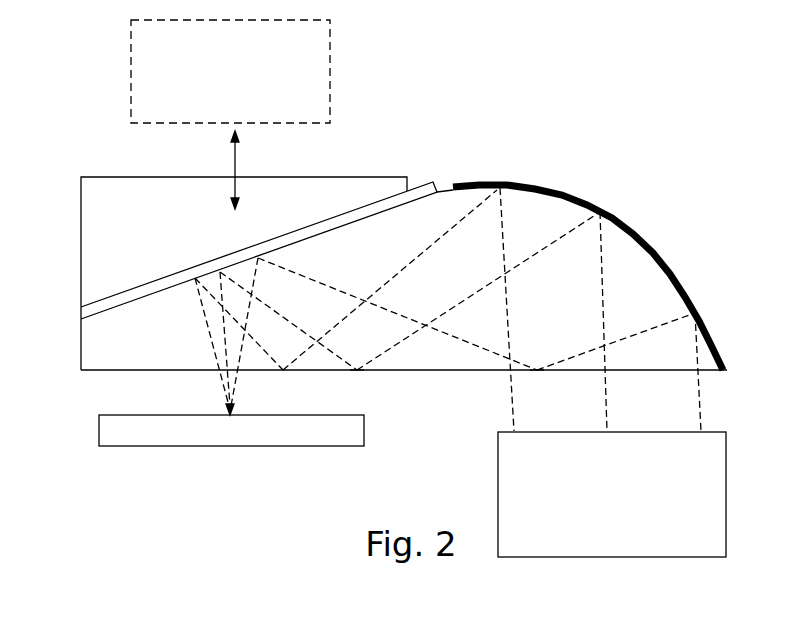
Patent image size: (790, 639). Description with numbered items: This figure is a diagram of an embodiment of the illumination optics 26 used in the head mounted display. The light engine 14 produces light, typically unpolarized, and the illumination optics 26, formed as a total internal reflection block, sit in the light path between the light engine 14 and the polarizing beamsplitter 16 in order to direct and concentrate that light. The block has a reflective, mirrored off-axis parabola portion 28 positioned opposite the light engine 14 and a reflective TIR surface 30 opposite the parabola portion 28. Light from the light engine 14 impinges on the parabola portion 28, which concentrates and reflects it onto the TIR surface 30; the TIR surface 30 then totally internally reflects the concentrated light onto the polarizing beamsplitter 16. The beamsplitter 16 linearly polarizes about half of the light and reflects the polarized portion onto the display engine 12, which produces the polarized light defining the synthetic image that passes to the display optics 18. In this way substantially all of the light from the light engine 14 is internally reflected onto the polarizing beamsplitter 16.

The display engine 12 is at (203, 447).
The light engine 14 is at (625, 505).
The polarizing beamsplitter 16 is at (80, 313).
The display optics 18 is at (246, 79).
The illumination optics 26 is at (484, 154).
The off-axis parabola portion 28 is at (647, 234).
The TIR surface 30 is at (357, 372).